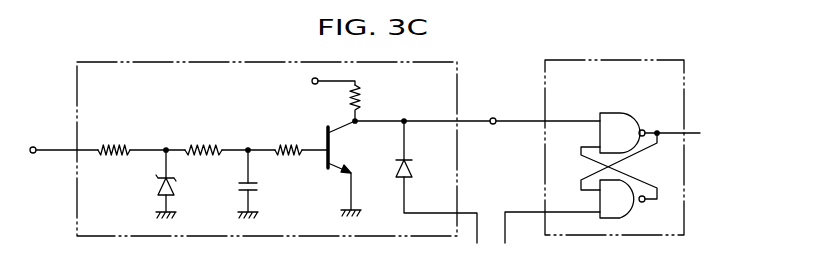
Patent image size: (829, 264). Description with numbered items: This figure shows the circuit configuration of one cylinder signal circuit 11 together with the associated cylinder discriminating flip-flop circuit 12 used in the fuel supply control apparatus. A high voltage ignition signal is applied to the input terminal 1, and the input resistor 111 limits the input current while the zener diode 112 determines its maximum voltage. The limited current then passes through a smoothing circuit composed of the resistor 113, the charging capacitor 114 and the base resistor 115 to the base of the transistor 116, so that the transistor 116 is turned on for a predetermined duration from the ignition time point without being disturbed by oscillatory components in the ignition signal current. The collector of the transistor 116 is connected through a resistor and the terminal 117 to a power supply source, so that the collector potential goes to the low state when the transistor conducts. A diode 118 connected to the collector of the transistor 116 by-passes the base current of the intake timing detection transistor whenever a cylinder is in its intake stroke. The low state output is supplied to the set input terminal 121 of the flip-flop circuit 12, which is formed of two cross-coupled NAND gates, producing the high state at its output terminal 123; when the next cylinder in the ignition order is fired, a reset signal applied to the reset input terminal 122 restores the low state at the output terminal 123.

The input terminal 1 is at (34, 147).
The cylinder signal circuit 11 is at (255, 61).
The input resistor 111 is at (117, 142).
The zener diode 112 is at (162, 184).
The resistor 113 is at (197, 143).
The charging capacitor 114 is at (240, 188).
The base resistor 115 is at (291, 143).
The transistor 116 is at (336, 148).
The terminal 117 is at (311, 81).
The diode 118 is at (410, 167).
The cylinder discriminating flip-flop circuit 12 is at (560, 40).
The set input terminal 121 is at (496, 117).
The reset input terminal 122 is at (565, 211).
The output terminal 123 is at (671, 131).